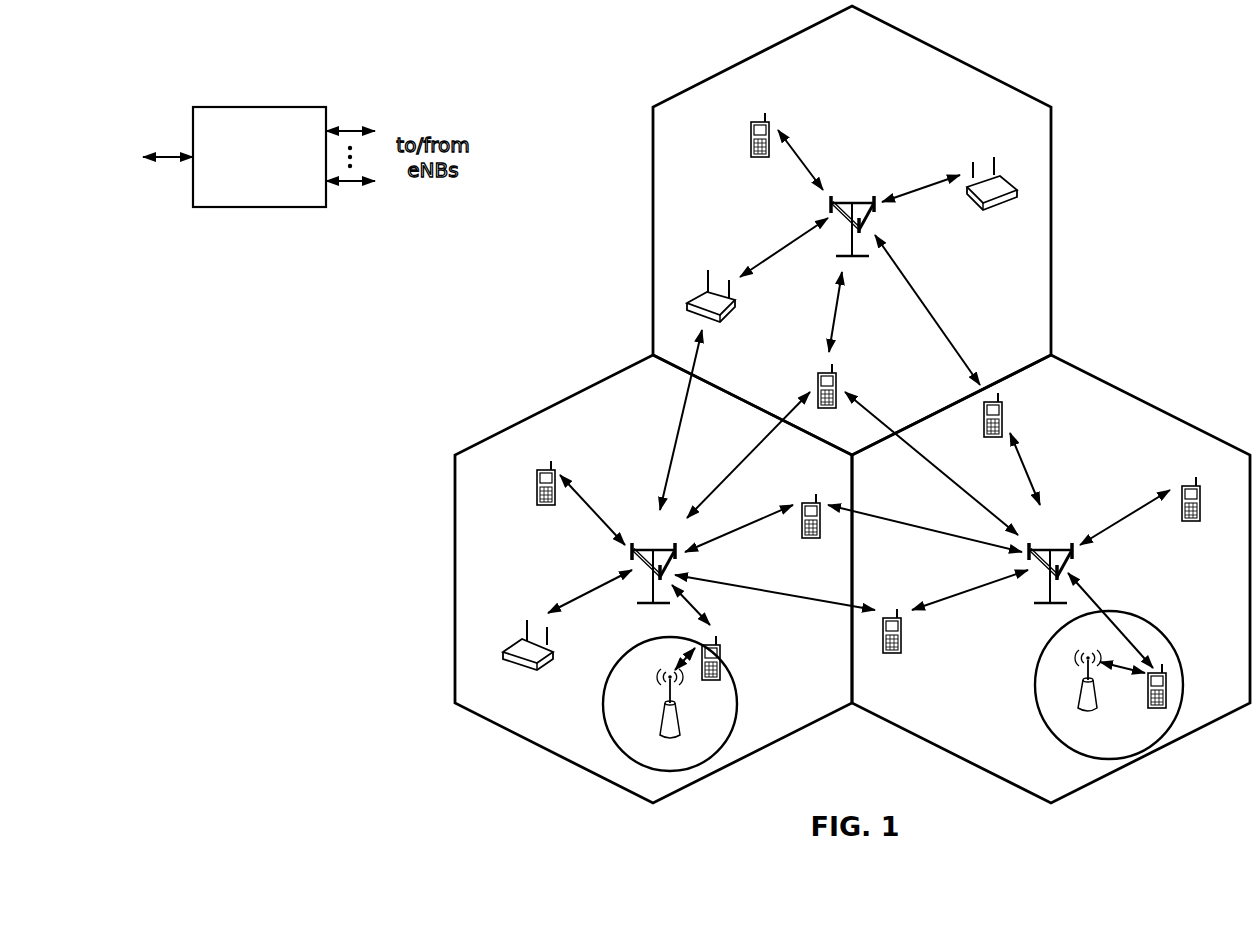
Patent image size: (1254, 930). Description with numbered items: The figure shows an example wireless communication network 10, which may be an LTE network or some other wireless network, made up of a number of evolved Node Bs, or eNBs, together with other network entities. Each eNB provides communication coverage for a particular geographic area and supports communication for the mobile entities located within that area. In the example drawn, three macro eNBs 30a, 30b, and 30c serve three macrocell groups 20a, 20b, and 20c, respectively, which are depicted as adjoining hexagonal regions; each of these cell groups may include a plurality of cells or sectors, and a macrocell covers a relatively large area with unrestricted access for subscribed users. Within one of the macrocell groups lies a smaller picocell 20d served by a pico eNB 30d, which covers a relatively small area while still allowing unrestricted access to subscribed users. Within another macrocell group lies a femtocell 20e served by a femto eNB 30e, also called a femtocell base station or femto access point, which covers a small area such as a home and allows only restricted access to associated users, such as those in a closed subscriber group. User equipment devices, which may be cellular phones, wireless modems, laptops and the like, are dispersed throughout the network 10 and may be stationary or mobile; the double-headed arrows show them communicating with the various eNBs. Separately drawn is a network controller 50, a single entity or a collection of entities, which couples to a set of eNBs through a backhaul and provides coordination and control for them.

The wireless communication network 10 is at (1186, 68).
The macrocell group 20a is at (950, 54).
The macrocell group 20b is at (555, 403).
The macrocell group 20c is at (1150, 403).
The picocell 20d is at (624, 652).
The femtocell 20e is at (1162, 631).
The macro eNB 30a is at (848, 197).
The macro eNB 30b is at (648, 545).
The macro eNB 30c is at (1046, 545).
The pico eNB 30d is at (678, 727).
The femto eNB 30e is at (1096, 700).
The network controller 50 is at (258, 107).